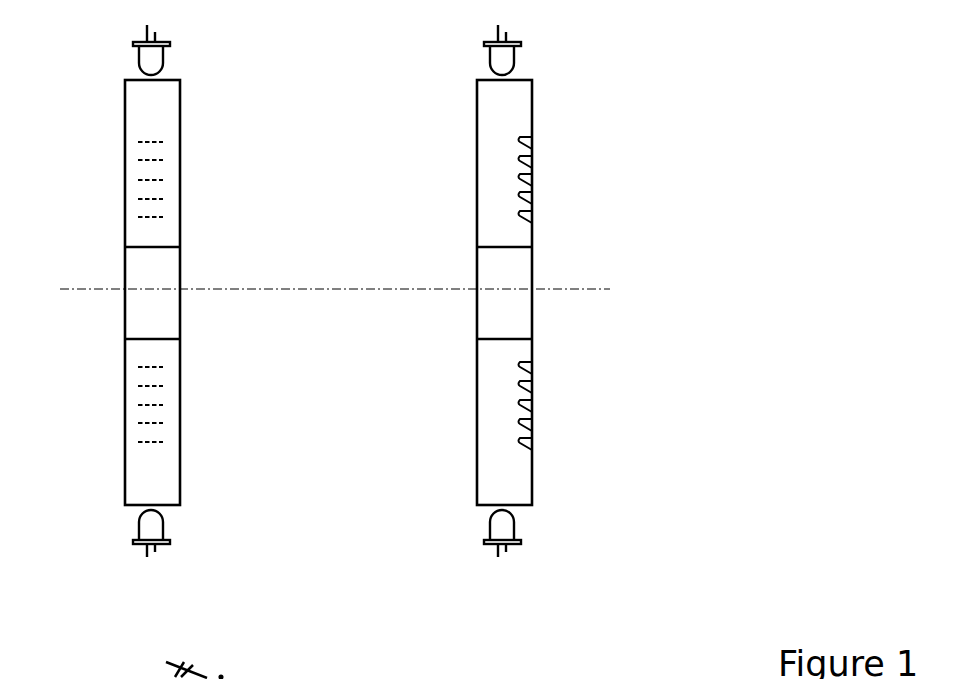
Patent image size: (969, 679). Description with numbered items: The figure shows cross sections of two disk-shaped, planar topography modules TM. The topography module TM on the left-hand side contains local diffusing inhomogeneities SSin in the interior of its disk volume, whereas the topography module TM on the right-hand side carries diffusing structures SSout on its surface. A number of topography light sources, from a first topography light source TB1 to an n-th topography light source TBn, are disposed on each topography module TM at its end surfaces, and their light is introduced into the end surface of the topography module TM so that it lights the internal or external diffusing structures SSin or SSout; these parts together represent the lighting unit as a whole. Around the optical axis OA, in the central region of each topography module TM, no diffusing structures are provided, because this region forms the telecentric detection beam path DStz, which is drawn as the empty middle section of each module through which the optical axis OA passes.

The topography light source TB1 is at (488, 55).
The topography light sources TBn is at (492, 527).
The topography module TM is at (492, 117).
The local diffusing inhomogeneities SSin is at (155, 180).
The surface structures SSout is at (518, 425).
The telecentric detection beam path DStz is at (492, 315).
The optical axis OA is at (293, 290).